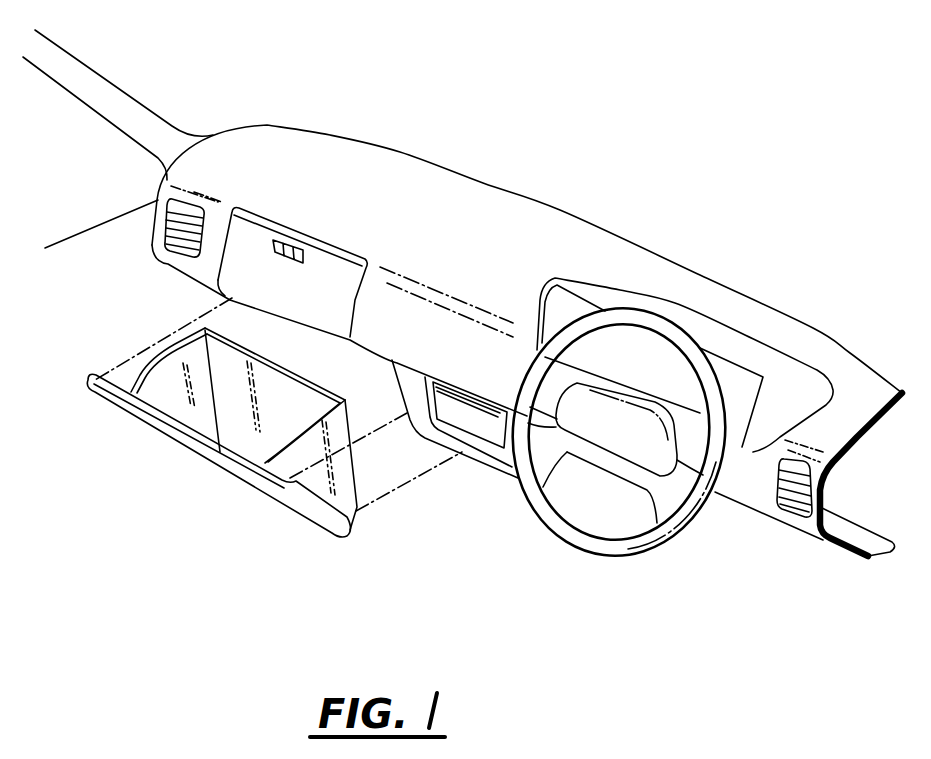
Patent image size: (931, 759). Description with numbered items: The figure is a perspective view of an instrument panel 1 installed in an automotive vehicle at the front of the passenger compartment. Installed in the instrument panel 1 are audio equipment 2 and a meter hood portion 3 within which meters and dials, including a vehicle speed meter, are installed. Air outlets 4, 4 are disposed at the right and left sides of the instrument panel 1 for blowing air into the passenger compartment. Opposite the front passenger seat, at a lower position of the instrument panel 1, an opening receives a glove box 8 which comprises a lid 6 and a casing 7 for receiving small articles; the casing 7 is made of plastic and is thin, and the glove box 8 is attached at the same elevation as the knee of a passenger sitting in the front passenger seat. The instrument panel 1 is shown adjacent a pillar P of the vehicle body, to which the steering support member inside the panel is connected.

The instrument panel 1 is at (478, 196).
The audio equipment 2 is at (482, 430).
The meter hood portion 3 is at (675, 303).
The air outlet 4 is at (157, 202).
The lid 6 is at (152, 428).
The casing 7 is at (343, 495).
The glove box 8 is at (241, 434).
The pillar P is at (143, 114).